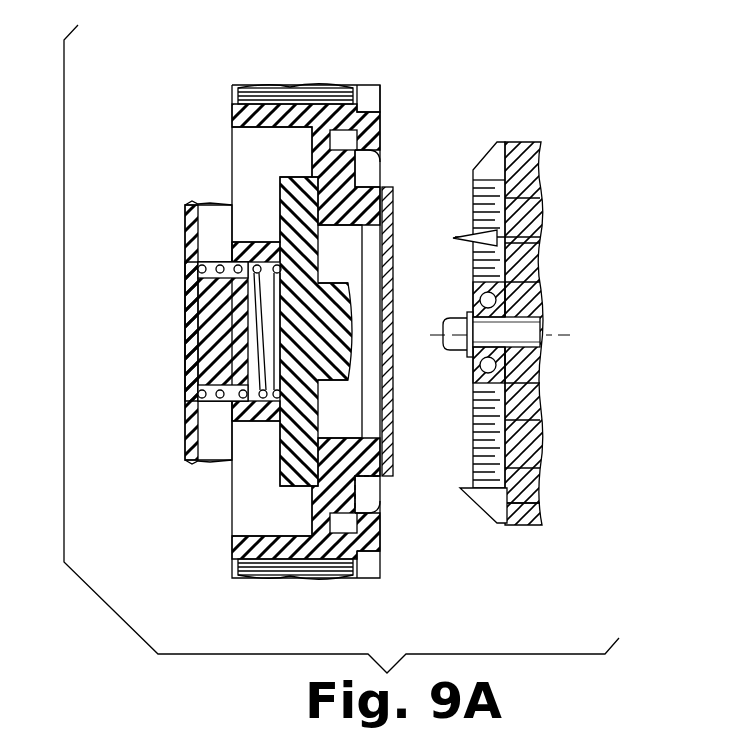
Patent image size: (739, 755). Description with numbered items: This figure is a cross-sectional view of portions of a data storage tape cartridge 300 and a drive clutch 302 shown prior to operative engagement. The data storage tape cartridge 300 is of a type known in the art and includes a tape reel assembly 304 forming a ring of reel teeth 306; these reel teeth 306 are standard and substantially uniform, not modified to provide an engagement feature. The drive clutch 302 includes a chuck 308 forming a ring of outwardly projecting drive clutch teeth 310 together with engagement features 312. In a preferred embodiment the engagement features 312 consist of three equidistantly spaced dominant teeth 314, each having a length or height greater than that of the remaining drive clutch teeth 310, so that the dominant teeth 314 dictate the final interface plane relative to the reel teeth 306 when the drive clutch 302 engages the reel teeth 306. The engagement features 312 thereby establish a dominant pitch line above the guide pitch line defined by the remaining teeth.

The data storage tape cartridge 300 is at (287, 64).
The drive clutch 302 is at (513, 535).
The tape reel assembly 304 is at (232, 548).
The reel teeth 306 is at (383, 173).
The chuck 308 is at (504, 139).
The drive clutch teeth 310 is at (484, 157).
The engagement features 312 is at (455, 237).
The dominant teeth 314 is at (540, 237).